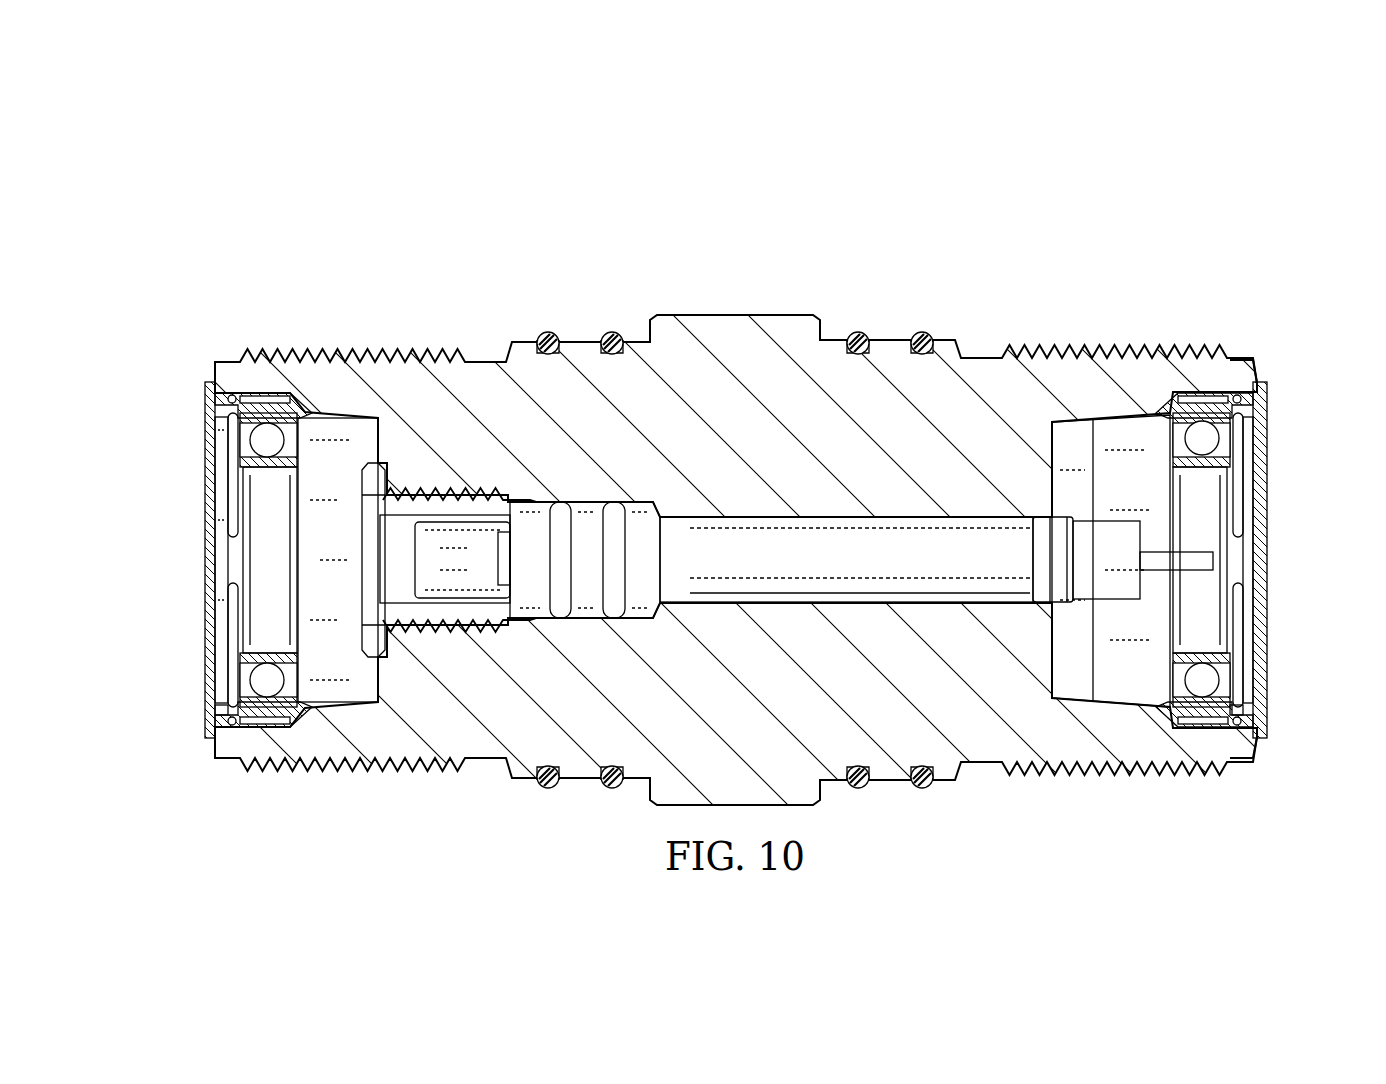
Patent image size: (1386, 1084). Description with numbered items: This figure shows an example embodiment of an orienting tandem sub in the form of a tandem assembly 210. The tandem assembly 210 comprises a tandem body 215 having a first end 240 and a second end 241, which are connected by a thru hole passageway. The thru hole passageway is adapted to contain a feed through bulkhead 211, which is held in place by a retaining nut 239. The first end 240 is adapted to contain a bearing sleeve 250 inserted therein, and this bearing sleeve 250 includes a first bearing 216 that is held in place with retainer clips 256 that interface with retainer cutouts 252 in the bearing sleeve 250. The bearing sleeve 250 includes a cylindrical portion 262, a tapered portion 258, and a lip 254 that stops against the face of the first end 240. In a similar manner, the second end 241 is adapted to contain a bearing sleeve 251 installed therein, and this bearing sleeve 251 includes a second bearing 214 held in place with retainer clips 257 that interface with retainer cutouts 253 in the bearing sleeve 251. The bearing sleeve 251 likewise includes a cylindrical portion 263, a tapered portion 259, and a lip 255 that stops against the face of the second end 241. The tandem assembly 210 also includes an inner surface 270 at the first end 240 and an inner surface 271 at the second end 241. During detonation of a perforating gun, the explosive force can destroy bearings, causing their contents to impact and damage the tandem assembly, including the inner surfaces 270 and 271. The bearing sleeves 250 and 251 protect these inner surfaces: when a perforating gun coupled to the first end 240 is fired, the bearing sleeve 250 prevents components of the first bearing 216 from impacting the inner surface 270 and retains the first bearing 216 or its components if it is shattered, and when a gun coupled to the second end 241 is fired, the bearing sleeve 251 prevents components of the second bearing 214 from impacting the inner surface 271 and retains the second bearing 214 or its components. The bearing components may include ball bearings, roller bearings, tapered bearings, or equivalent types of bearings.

The tandem assembly 210 is at (588, 194).
The feed through bulkhead 211 is at (636, 626).
The second bearing 214 is at (257, 658).
The tandem body 215 is at (705, 313).
The first bearing 216 is at (1208, 657).
The retaining nut 239 is at (362, 490).
The first end 240 is at (1262, 372).
The second end 241 is at (212, 372).
The bearing sleeve 250 is at (1268, 457).
The bearing sleeve 251 is at (203, 473).
The retainer cutouts 252 is at (1240, 533).
The retainer cutouts 253 is at (232, 532).
The lip 254 is at (1267, 718).
The lip 255 is at (204, 722).
The retainer clips 256 is at (1237, 727).
The retainer clips 257 is at (236, 726).
The tapered portion 258 is at (1152, 708).
The tapered portion 259 is at (320, 718).
The cylindrical portion 262 is at (1225, 718).
The cylindrical portion 263 is at (273, 720).
The inner surface 270 is at (1142, 400).
The inner surface 271 is at (328, 405).